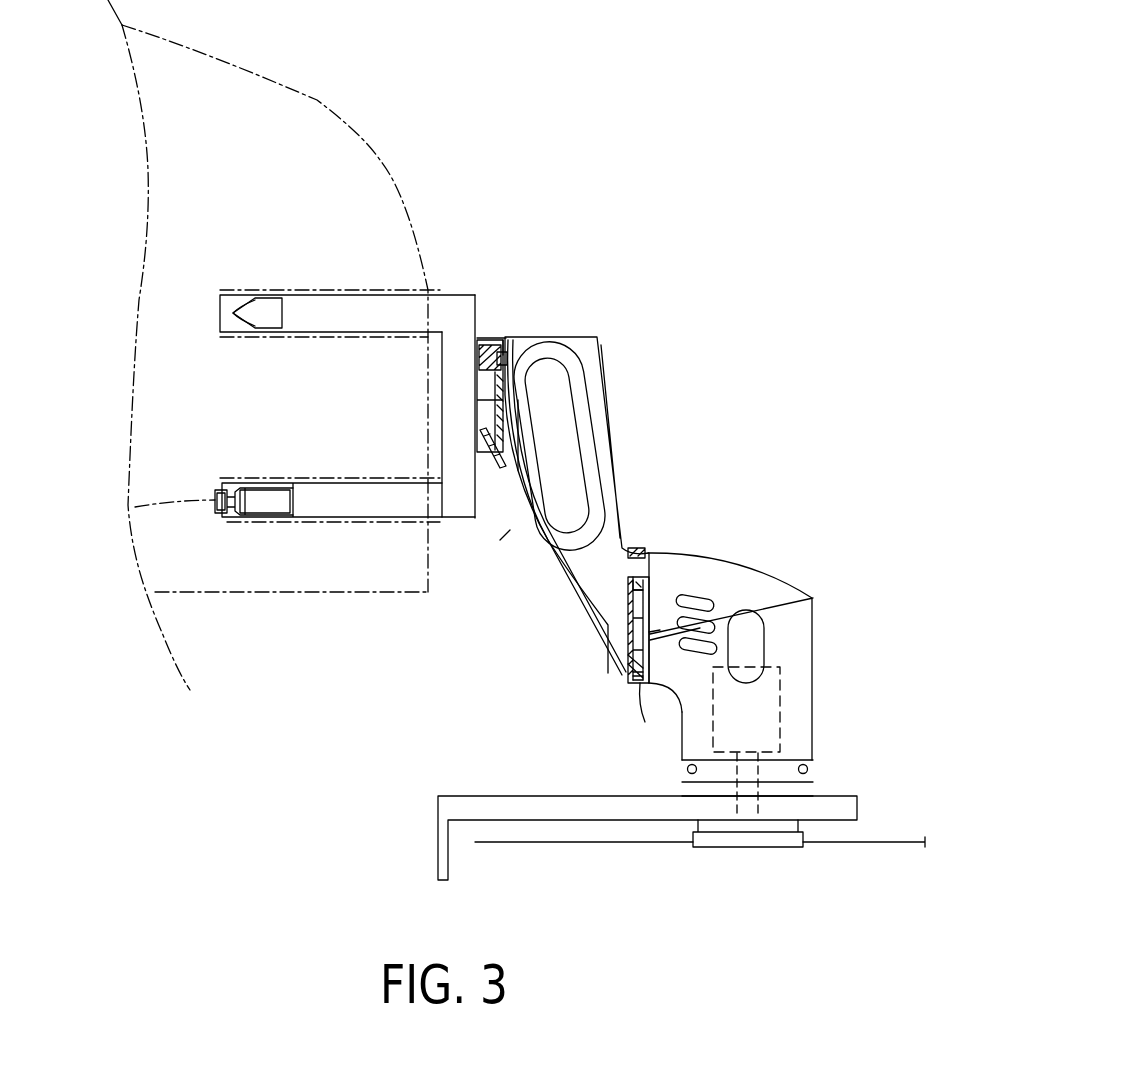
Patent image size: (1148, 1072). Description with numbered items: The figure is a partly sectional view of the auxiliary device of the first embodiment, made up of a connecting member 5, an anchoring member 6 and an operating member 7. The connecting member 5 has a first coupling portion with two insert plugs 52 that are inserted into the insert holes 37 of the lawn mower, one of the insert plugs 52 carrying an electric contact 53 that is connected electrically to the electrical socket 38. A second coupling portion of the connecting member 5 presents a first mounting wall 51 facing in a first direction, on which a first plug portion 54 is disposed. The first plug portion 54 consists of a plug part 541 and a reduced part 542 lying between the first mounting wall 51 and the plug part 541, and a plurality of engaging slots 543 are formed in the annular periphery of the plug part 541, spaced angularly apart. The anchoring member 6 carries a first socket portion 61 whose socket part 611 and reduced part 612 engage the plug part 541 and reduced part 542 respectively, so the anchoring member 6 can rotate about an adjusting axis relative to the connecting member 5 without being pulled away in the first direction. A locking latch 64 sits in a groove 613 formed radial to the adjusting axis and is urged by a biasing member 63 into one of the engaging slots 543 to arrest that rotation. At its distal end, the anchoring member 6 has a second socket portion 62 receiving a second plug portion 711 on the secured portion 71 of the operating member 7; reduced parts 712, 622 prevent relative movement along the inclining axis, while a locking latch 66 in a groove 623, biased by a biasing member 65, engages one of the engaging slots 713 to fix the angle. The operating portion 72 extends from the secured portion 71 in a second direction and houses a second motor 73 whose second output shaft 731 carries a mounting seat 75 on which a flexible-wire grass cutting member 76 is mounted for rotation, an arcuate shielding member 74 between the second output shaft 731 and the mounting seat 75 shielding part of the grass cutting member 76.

The insert holes 37 is at (337, 292).
The connecting member 5 is at (393, 278).
The first mounting wall 51 is at (479, 338).
The insert plugs 52 is at (400, 310).
The electric contact 53 is at (257, 507).
The first plug portion 54 is at (467, 403).
The plug part 541 is at (518, 500).
The reduced part 542 is at (500, 545).
The engaging slots 543 is at (597, 337).
The electrical socket 38 is at (220, 522).
The anchoring member 6 is at (603, 445).
The first socket portion 61 is at (600, 390).
The socket part 611 is at (600, 365).
The reduced part 612 is at (489, 468).
The groove 613 is at (507, 347).
The second socket portion 62 is at (625, 627).
The reduced part 622 is at (650, 580).
The groove 623 is at (622, 673).
The biasing member 63 is at (485, 337).
The locking latch 64 is at (500, 357).
The biasing member 65 is at (642, 688).
The locking latch 66 is at (668, 697).
The operating member 7 is at (813, 655).
The secured portion 71 is at (672, 585).
The second plug portion 711 is at (658, 600).
The reduced part 712 is at (648, 647).
The engaging slots 713 is at (660, 602).
The operating portion 72 is at (780, 768).
The second motor 73 is at (763, 700).
The second output shaft 731 is at (807, 788).
The arcuate shielding member 74 is at (445, 806).
The mounting seat 75 is at (770, 845).
The grass cutting member 76 is at (568, 848).